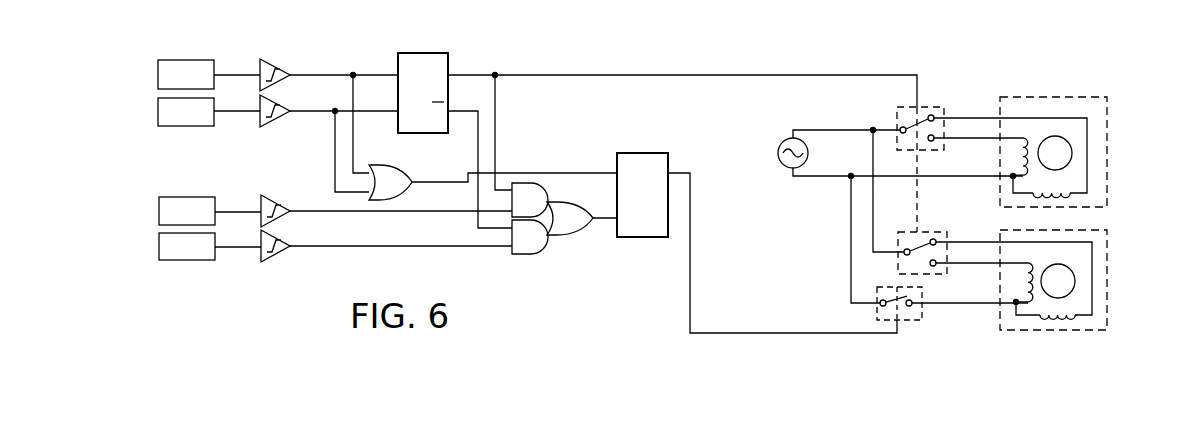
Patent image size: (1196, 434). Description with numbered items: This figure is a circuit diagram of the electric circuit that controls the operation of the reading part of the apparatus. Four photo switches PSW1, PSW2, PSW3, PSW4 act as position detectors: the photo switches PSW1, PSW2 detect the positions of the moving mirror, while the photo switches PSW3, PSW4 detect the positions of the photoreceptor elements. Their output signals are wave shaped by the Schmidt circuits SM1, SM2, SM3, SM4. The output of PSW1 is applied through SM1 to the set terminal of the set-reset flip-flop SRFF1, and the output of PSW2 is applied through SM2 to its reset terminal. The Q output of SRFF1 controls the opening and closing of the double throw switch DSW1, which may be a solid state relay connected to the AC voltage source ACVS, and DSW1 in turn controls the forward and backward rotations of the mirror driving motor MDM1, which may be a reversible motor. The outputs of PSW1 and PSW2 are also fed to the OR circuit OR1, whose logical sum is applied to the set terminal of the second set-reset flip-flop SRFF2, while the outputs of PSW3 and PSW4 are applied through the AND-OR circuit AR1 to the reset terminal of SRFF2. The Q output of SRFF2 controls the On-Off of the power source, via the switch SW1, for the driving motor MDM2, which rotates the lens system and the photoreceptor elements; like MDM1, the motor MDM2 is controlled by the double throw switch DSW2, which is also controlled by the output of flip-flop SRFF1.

The photo switch PSW1 is at (158, 65).
The photo switch PSW2 is at (158, 113).
The photo switch PSW3 is at (159, 212).
The photo switch PSW4 is at (159, 258).
The Schmidt circuit SM1 is at (276, 62).
The Schmidt circuit SM2 is at (275, 126).
The Schmidt circuit SM3 is at (286, 184).
The Schmidt circuit SM4 is at (281, 255).
The set-reset flip-flop SRFF1 is at (416, 53).
The set-reset flip-flop SRFF2 is at (644, 238).
The OR circuit OR1 is at (397, 166).
The AND-OR circuit AR1 is at (548, 256).
The AC voltage source ACVS is at (779, 151).
The double throw switch DSW1 is at (945, 107).
The double throw switch DSW2 is at (953, 220).
The power switch SW1 is at (922, 321).
The mirror driving motor MDM1 is at (1107, 140).
The driving motor MDM2 is at (1107, 272).